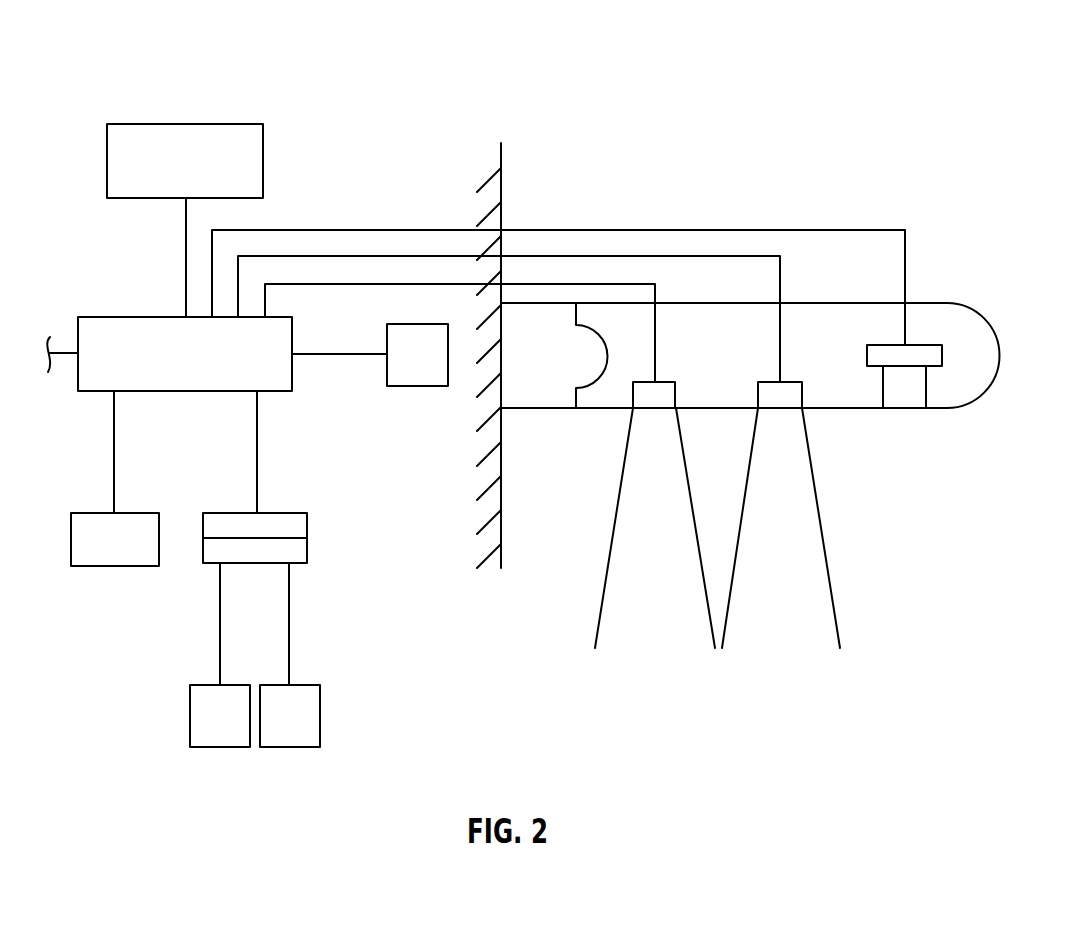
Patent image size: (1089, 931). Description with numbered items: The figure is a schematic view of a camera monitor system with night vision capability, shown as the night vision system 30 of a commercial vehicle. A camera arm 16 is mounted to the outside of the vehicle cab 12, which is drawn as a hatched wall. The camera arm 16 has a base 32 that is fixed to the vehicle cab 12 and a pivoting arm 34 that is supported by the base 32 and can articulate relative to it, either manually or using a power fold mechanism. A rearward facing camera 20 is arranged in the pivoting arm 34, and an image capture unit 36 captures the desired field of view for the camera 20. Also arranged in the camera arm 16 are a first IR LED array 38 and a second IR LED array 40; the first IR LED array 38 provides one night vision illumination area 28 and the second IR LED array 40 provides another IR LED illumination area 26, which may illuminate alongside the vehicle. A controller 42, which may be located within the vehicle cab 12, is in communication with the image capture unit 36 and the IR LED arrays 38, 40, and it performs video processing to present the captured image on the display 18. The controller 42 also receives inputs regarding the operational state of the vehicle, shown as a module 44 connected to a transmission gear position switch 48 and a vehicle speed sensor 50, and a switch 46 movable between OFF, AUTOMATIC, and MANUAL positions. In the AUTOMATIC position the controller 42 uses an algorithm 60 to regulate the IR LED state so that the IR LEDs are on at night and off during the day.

The night vision system 30 is at (456, 62).
The display 18 is at (208, 124).
The vehicle cab 12 is at (502, 198).
The camera arm 16 is at (919, 273).
The image capture unit 36 is at (908, 343).
The pivoting arm 34 is at (995, 353).
The rearward facing camera 20 is at (903, 400).
The first IR LED array 38 is at (785, 380).
The second IR LED array 40 is at (658, 380).
The base 32 is at (533, 398).
The controller 42 is at (108, 393).
The switch 46 is at (98, 510).
The algorithm 60 is at (417, 386).
The interface module 44 is at (311, 538).
The transmission gear position switch 48 is at (211, 683).
The vehicle speed sensor 50 is at (302, 683).
The IR LED illumination area 26 is at (668, 636).
The night vision illumination area 28 is at (794, 636).